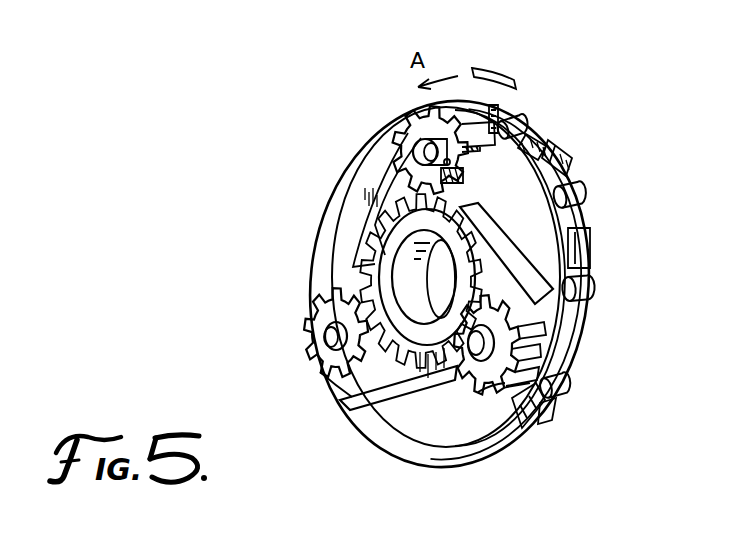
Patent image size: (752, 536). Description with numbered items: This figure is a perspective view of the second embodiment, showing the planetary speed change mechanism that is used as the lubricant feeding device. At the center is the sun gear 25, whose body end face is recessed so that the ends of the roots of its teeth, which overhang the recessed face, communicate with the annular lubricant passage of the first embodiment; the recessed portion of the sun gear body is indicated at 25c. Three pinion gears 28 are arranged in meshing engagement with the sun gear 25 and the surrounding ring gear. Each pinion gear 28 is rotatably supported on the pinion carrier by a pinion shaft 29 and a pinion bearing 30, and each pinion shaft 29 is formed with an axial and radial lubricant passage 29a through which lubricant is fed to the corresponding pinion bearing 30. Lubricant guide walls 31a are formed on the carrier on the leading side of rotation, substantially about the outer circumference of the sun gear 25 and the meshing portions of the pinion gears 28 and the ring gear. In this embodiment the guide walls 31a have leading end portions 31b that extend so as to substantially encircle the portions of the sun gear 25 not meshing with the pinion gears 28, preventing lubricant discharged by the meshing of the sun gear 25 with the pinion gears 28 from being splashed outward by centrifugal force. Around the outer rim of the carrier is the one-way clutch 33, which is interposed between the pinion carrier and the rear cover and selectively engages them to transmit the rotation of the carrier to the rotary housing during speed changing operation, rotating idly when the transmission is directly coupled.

The sun gear 25 is at (395, 445).
The arm of carrier plate 25c is at (352, 233).
The pinion gear 28 is at (408, 112).
The pinion shaft 29 is at (425, 152).
The lubricant passage 29a is at (450, 164).
The pinion bearing 30 is at (327, 372).
The lubricant guide wall 31a is at (357, 182).
The leading end portion 31b is at (372, 248).
The one-way clutch 33 is at (584, 194).